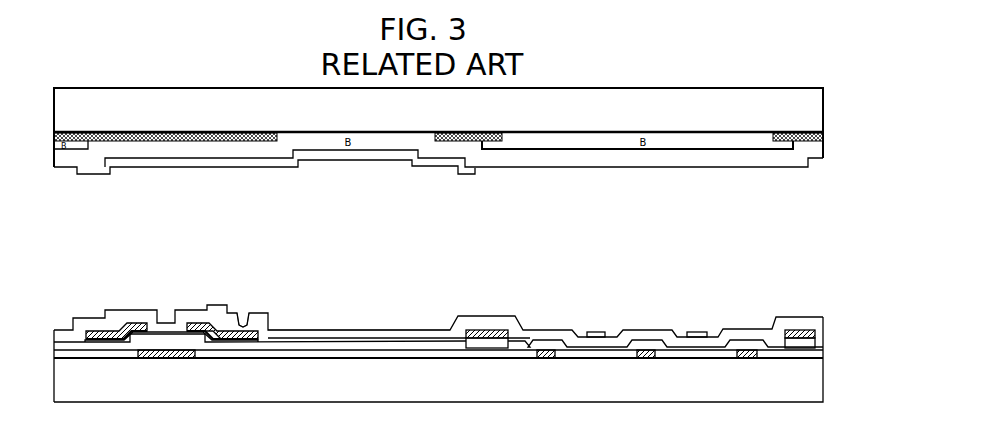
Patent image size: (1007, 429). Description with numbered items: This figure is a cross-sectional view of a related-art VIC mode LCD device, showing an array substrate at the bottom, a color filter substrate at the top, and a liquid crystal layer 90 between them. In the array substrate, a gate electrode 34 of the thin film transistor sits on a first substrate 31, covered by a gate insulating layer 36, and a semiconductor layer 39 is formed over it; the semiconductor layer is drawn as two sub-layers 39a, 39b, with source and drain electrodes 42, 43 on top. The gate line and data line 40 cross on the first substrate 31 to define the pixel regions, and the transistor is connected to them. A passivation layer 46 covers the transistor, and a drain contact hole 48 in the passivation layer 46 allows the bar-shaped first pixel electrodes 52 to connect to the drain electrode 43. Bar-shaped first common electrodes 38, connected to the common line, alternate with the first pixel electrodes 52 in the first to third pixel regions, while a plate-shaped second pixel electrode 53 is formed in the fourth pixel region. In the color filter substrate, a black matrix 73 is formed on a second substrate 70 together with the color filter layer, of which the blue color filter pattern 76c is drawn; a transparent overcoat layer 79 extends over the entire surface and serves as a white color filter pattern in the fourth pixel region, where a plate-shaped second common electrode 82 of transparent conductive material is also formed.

The second substrate 70 is at (806, 104).
The black matrix 73 is at (208, 131).
The blue color filter pattern 76c is at (570, 132).
The overcoat layer 79 is at (555, 160).
The second common electrode 82 is at (250, 160).
The liquid crystal layer 90 is at (80, 230).
The first substrate 31 is at (793, 393).
The gate electrode 34 is at (160, 359).
The gate insulating layer 36 is at (330, 351).
The first common electrode 38 is at (546, 359).
The semiconductor layer 39 is at (174, 367).
The semiconductor layer 39a is at (205, 343).
The ohmic contact layer 39b is at (232, 342).
The data line 40 is at (487, 330).
The source electrode 42 is at (128, 322).
The drain electrode 43 is at (192, 322).
The passivation layer 46 is at (368, 337).
The drain contact hole 48 is at (243, 316).
The first pixel electrode 52 is at (597, 332).
The second pixel electrode 53 is at (333, 329).